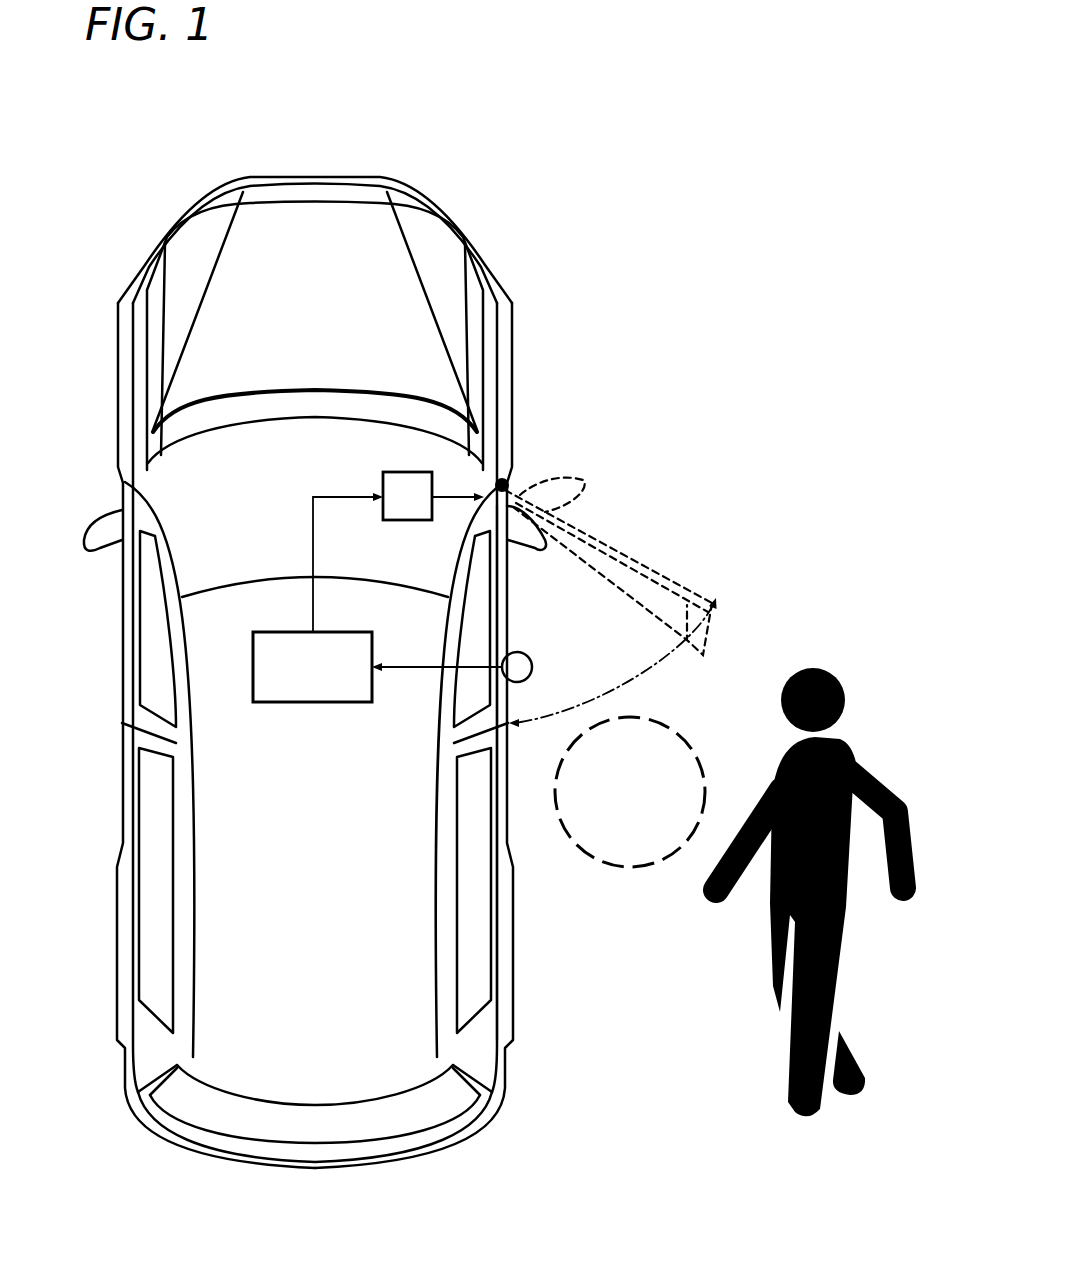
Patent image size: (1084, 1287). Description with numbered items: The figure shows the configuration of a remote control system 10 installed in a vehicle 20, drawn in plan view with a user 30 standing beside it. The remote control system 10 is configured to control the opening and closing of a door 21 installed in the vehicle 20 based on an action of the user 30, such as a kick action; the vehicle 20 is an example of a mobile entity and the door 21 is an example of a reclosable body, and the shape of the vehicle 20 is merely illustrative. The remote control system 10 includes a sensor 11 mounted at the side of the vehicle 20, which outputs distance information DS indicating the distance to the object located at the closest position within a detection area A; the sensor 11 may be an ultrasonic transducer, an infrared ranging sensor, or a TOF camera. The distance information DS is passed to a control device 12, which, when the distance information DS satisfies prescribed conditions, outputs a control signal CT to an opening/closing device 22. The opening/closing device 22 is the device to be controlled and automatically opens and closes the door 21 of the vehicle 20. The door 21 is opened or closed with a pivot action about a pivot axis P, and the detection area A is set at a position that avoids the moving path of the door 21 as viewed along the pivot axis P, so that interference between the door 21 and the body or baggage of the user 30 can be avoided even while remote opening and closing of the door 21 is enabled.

The remote control system 10 is at (330, 662).
The sensor 11 is at (532, 667).
The control device 12 is at (312, 704).
The vehicle 20 is at (518, 218).
The door 21 is at (502, 595).
The opening/closing device 22 is at (388, 470).
The user 30 is at (838, 678).
The pivot axis P is at (507, 483).
The control signal CT is at (313, 530).
The distance information DS is at (410, 672).
The detection area A is at (630, 868).